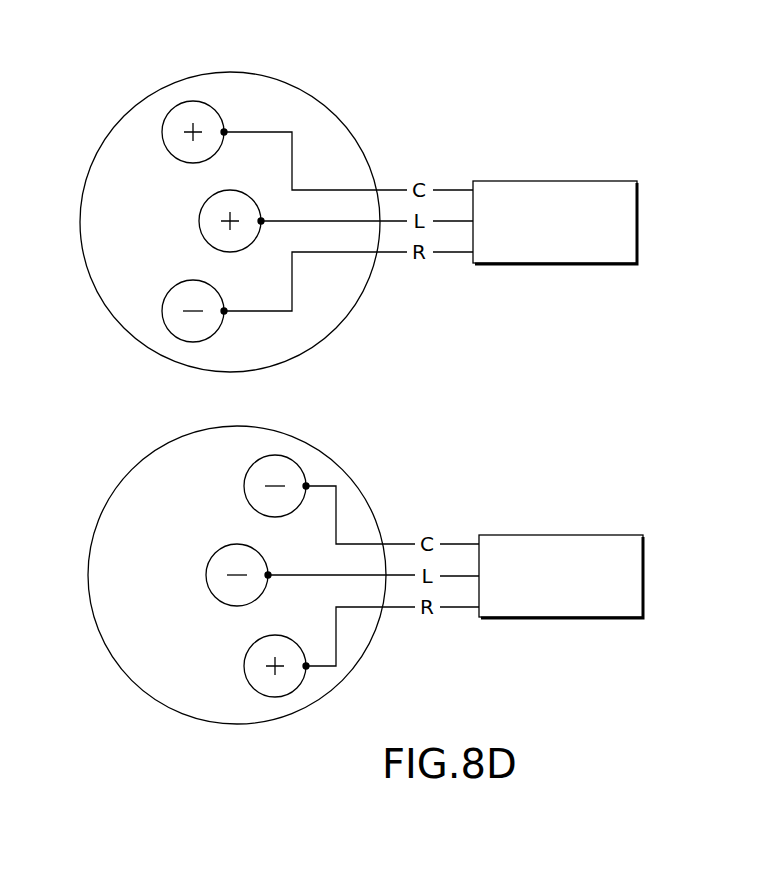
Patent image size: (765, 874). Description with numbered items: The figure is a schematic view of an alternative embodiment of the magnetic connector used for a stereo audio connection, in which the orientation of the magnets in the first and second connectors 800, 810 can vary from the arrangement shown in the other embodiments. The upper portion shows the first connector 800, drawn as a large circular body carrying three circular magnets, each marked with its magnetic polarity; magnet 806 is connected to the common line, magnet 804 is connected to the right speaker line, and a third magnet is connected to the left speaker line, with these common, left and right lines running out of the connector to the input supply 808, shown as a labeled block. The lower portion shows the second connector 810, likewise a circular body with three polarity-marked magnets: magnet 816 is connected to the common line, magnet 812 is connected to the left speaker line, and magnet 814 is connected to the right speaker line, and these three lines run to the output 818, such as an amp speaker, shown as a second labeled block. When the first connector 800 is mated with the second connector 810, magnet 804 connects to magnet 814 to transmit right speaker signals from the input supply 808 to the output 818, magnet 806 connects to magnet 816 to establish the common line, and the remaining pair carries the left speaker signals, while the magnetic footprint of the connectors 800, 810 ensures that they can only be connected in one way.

The first connector 800 is at (127, 122).
The magnet 804 is at (161, 309).
The magnet 806 is at (193, 101).
The input supply 808 is at (573, 181).
The second connector 810 is at (133, 478).
The magnet 812 is at (207, 589).
The magnet 814 is at (282, 697).
The magnet 816 is at (288, 457).
The output 818 is at (580, 535).